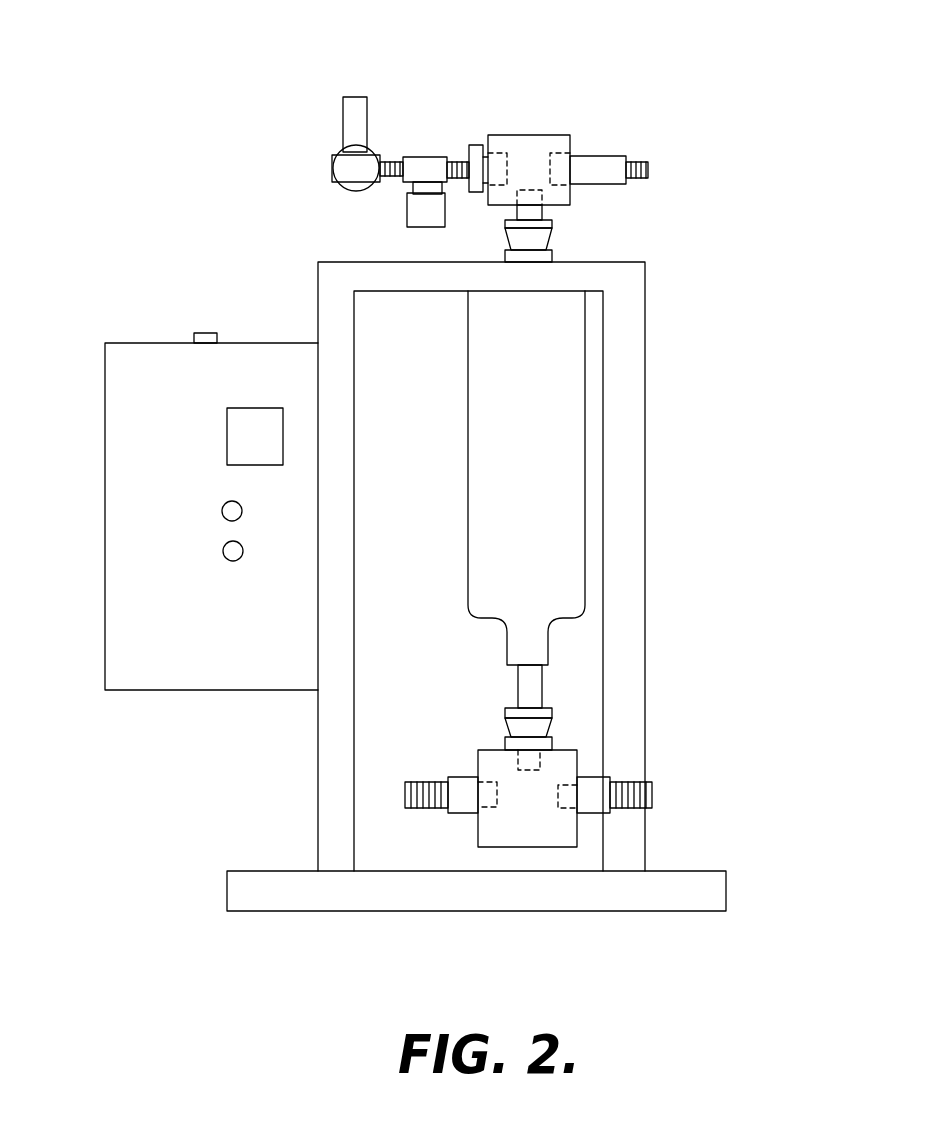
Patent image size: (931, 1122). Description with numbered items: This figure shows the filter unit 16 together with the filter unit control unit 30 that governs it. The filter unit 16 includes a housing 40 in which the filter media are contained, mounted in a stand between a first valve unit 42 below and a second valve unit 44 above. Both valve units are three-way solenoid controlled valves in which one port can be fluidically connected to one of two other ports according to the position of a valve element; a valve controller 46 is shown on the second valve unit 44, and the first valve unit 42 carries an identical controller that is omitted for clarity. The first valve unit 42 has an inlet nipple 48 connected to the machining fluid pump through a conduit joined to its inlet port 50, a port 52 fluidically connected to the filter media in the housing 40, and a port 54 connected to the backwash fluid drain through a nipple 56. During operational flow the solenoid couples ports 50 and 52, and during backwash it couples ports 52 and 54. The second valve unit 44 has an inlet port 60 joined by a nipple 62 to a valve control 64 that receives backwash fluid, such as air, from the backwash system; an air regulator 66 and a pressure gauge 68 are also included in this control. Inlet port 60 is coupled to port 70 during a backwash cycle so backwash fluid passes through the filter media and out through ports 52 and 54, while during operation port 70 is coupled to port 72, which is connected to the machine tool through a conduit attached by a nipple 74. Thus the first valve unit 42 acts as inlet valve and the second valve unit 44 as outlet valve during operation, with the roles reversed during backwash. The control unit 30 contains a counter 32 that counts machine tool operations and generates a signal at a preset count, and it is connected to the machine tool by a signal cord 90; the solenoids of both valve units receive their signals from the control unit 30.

The filter unit 16 is at (700, 392).
The filter unit control unit 30 is at (145, 633).
The counter 32 is at (247, 408).
The housing 40 is at (557, 513).
The first valve unit 42 is at (566, 750).
The second valve unit 44 is at (505, 125).
The valve controller 46 is at (412, 210).
The inlet nipple 48 is at (465, 813).
The inlet port 50 is at (482, 785).
The port 52 is at (500, 752).
The port 54 is at (555, 805).
The nipple 56 is at (628, 790).
The inlet port 60 is at (509, 151).
The nipple 62 is at (454, 180).
The valve control 64 is at (445, 157).
The air regulator 66 is at (338, 97).
The pressure gauge 68 is at (333, 189).
The port 70 is at (572, 199).
The port 72 is at (565, 145).
The nipple 74 is at (633, 157).
The signal cord 90 is at (222, 551).